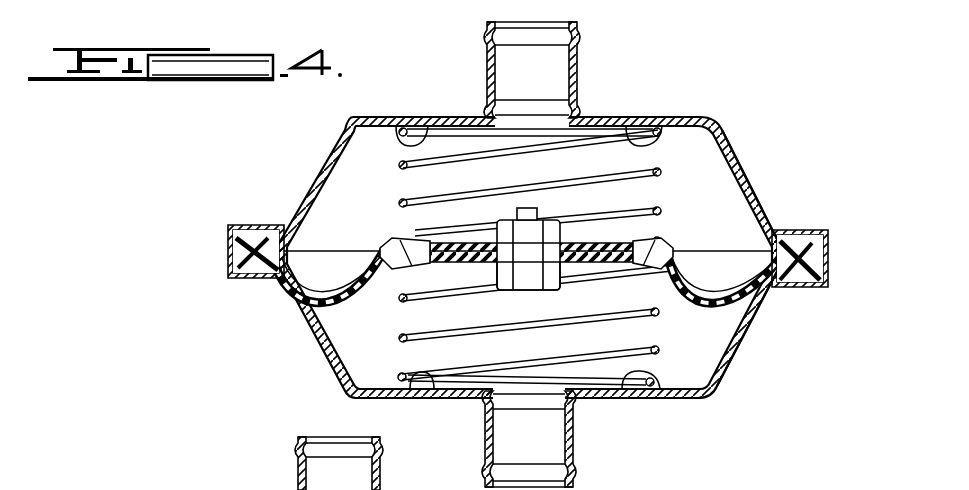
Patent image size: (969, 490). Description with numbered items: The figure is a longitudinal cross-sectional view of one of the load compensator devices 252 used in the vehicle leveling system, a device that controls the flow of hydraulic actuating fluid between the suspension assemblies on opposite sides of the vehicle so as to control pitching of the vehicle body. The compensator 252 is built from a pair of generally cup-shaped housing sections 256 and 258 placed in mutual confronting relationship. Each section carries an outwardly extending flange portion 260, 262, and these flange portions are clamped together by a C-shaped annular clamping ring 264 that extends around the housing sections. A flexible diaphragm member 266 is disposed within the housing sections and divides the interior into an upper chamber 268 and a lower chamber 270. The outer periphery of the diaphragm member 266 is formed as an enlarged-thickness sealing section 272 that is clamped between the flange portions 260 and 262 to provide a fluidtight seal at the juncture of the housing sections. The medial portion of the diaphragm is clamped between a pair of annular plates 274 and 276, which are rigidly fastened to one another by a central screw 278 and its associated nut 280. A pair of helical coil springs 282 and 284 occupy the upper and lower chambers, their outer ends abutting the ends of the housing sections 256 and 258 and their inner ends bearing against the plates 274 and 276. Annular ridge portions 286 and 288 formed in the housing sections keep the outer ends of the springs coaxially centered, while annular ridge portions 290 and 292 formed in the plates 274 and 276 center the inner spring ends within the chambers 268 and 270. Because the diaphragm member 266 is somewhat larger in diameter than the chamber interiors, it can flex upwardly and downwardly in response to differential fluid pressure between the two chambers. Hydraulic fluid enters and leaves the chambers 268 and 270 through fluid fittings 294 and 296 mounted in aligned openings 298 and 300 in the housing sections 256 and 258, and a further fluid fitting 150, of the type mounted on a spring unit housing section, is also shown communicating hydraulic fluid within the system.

The fluid fitting 150 is at (296, 465).
The load compensator device 252 is at (737, 127).
The cup-shaped housing section 256 is at (748, 160).
The cup-shaped housing section 258 is at (742, 350).
The flange portion 260 is at (248, 232).
The flange portion 262 is at (248, 283).
The C-shaped annular clamping ring 264 is at (226, 248).
The diaphragm member 266 is at (320, 304).
The upper chamber 268 is at (380, 207).
The lower chamber 270 is at (725, 337).
The sealing section 272 is at (812, 233).
The annular plate 274 is at (675, 242).
The annular plate 276 is at (393, 278).
The screw 278 is at (528, 283).
The nut 280 is at (535, 228).
The helical coil spring 282 is at (660, 170).
The helical coil spring 284 is at (660, 352).
The annular ridge portion 286 is at (407, 143).
The annular ridge portion 288 is at (422, 385).
The annular ridge portion 290 is at (410, 250).
The annular ridge portion 292 is at (418, 273).
The fluid fitting 294 is at (573, 68).
The fluid fitting 296 is at (574, 432).
The opening 298 is at (487, 108).
The opening 300 is at (487, 400).